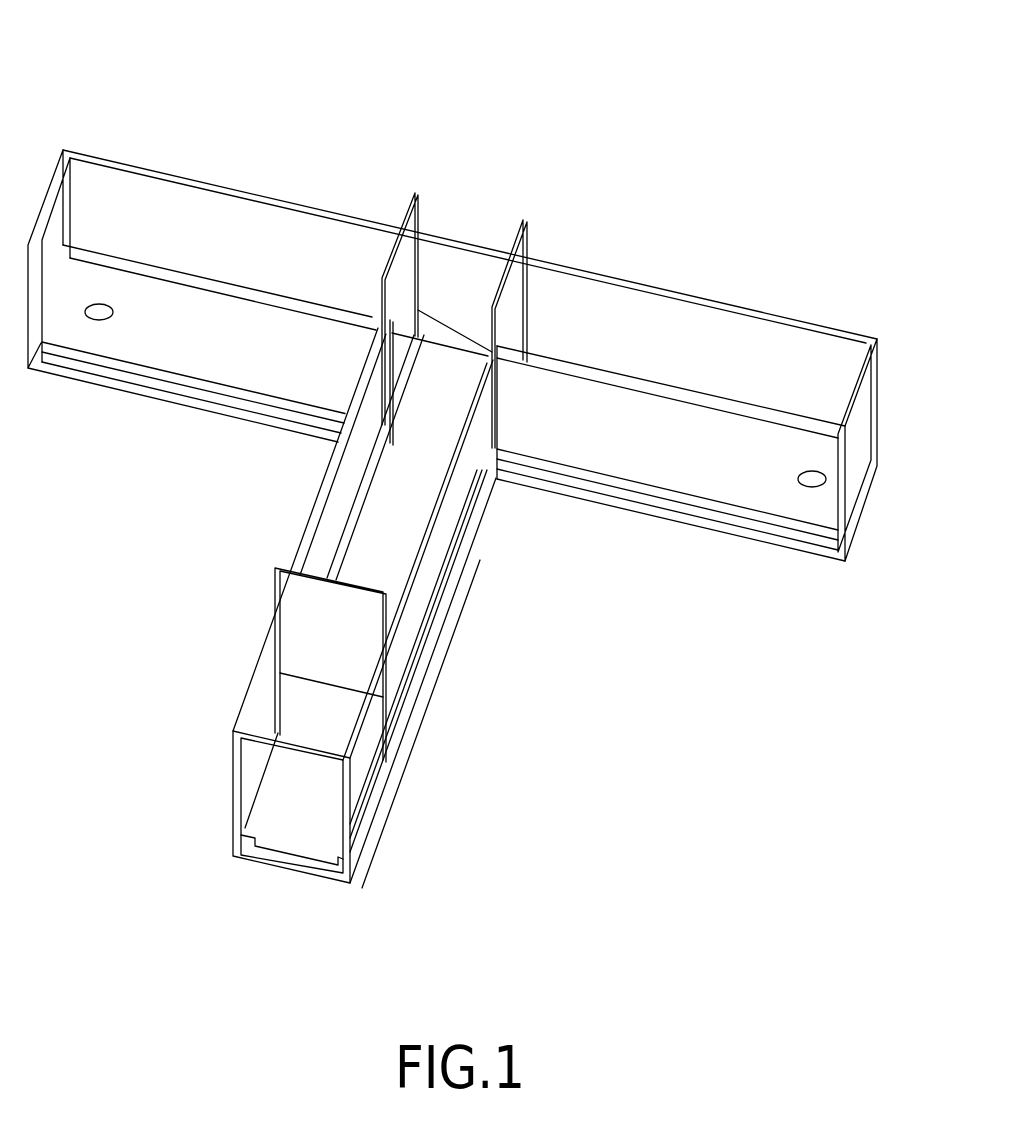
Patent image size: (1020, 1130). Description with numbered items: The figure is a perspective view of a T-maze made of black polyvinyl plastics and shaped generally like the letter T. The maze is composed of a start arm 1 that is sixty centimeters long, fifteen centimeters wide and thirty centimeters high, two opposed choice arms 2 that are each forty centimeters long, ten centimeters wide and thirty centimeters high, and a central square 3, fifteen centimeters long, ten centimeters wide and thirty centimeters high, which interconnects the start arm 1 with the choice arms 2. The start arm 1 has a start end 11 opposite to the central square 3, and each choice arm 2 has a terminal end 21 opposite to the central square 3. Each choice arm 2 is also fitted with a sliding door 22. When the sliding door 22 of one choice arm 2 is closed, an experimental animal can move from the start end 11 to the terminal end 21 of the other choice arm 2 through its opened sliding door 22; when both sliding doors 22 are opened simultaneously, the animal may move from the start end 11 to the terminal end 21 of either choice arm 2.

The start arm 1 is at (372, 857).
The start end 11 is at (288, 803).
The choice arm 2 is at (126, 156).
The terminal end 21 is at (97, 312).
The sliding door 22 is at (414, 192).
The central square 3 is at (437, 392).